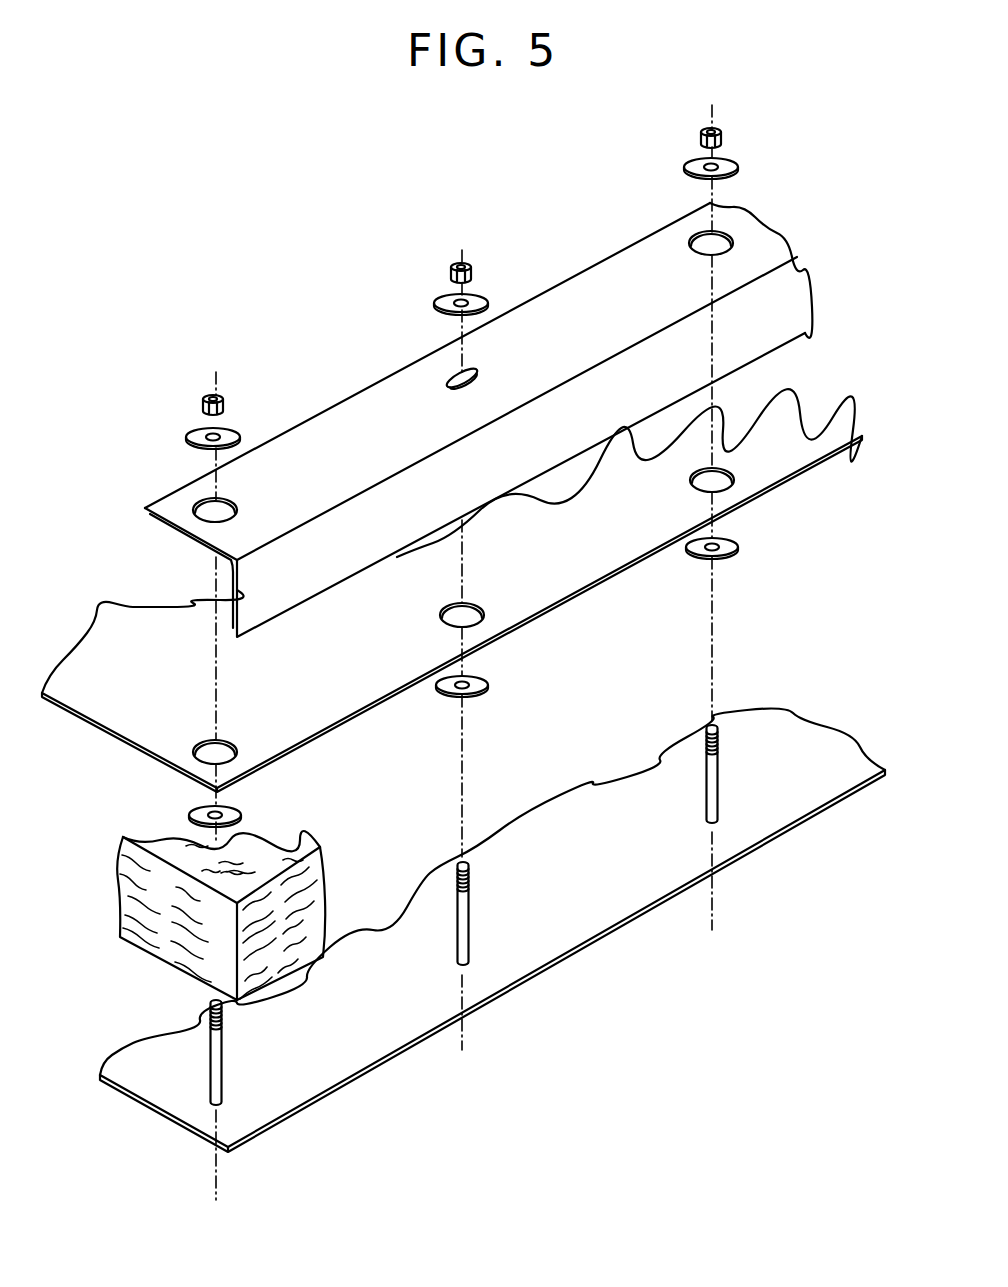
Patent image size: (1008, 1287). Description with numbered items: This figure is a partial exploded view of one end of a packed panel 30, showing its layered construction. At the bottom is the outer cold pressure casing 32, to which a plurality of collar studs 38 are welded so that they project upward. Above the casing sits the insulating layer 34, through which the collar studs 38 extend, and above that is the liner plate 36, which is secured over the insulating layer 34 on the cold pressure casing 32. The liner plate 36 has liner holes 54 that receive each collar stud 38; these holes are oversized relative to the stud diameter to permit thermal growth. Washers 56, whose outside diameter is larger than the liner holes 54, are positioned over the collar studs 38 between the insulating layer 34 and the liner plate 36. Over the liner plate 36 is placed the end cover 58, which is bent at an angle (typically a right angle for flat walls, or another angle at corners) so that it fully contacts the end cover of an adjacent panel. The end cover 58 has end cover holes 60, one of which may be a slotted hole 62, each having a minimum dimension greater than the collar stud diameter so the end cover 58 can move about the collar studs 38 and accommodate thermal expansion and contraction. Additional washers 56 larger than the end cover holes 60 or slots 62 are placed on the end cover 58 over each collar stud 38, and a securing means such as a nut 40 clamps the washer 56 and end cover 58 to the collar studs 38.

The packed panel 30 is at (133, 495).
The cold pressure casing 32 is at (838, 745).
The insulating layer 34 is at (277, 853).
The liner plate 36 is at (833, 427).
The collar studs 38 is at (735, 708).
The nut 40 is at (450, 271).
The liner holes 54 is at (720, 480).
The washers 56 is at (732, 162).
The end cover 58 is at (785, 252).
The end cover holes 60 is at (720, 243).
The slotted holes 62 is at (473, 377).